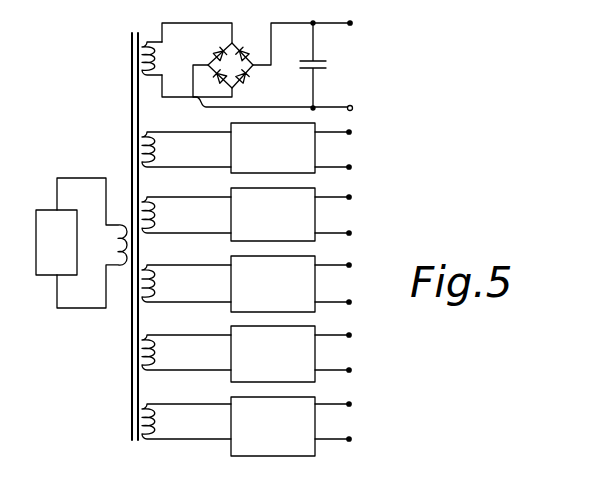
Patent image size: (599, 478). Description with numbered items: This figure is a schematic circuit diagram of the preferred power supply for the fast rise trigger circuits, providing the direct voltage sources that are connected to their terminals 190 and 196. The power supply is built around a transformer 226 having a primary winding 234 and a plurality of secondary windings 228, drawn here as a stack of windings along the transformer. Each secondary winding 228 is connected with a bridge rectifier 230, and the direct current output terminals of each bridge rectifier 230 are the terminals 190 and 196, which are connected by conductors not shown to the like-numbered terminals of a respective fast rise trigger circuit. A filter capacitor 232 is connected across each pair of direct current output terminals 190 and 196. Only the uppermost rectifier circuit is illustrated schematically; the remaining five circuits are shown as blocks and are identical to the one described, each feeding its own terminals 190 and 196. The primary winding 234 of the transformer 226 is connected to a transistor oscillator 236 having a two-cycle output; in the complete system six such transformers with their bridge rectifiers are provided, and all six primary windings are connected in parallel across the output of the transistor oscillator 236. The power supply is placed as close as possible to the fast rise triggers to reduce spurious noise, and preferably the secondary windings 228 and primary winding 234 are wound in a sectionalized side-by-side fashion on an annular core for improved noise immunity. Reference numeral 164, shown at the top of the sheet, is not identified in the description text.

The power supply 164 is at (85, 7).
The transformer 226 is at (135, 28).
The secondary winding 228 is at (156, 51).
The bridge rectifier 230 is at (233, 43).
The filter capacitor 232 is at (326, 62).
The primary winding 234 is at (126, 228).
The transistor oscillator 236 is at (43, 275).
The terminal 190 is at (351, 22).
The terminal 196 is at (353, 107).